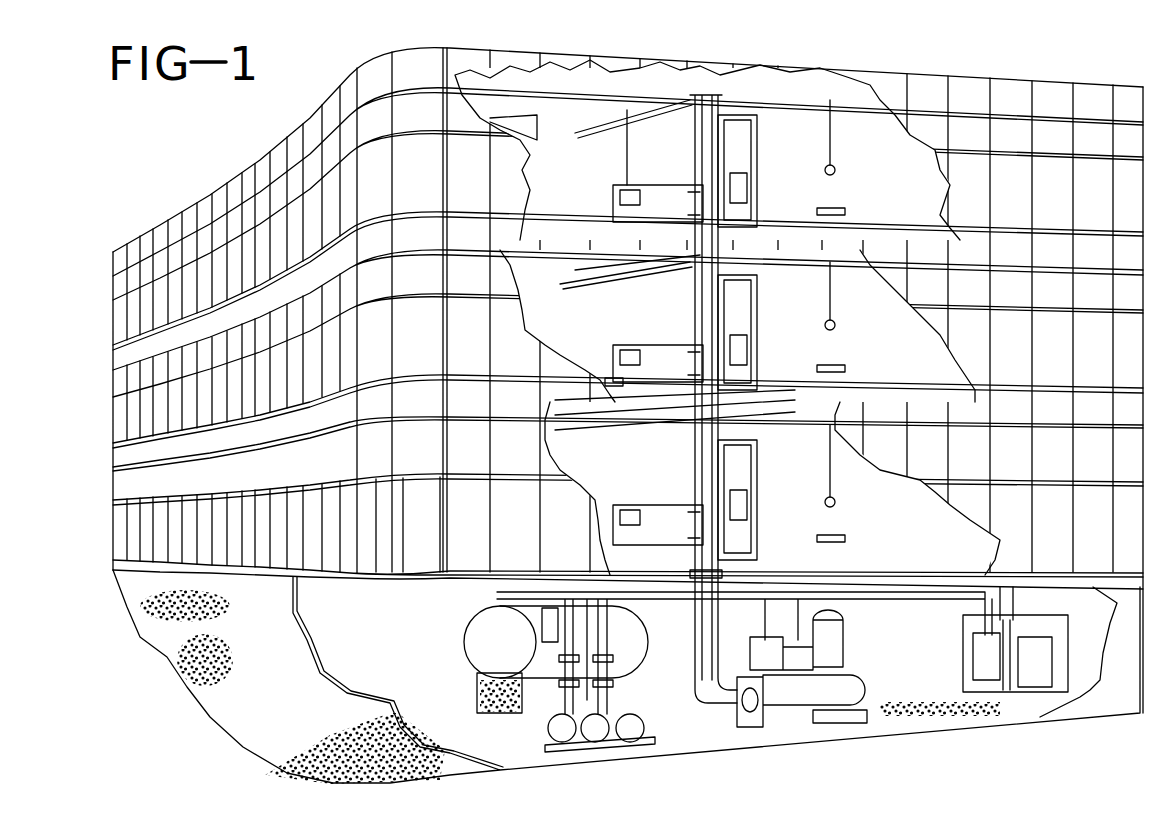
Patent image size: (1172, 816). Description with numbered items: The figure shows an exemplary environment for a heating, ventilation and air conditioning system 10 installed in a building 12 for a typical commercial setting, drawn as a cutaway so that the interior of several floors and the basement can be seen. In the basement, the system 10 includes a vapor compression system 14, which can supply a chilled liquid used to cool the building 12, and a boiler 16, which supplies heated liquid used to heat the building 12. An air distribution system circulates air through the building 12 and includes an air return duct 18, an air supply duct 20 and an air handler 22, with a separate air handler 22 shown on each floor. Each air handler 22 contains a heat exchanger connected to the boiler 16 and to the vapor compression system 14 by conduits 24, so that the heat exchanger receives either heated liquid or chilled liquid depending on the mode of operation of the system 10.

The heating, ventilation and air conditioning system 10 is at (935, 750).
The building 12 is at (1013, 78).
The vapor compression system 14 is at (792, 694).
The boiler 16 is at (476, 632).
The air return duct 18 is at (609, 378).
The air supply duct 20 is at (698, 102).
The air handler 22 is at (657, 345).
The conduits 24 is at (706, 568).